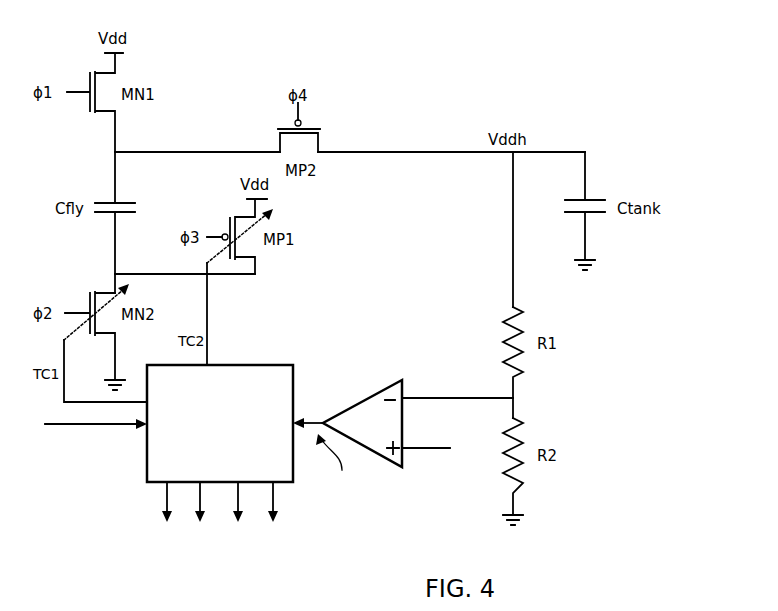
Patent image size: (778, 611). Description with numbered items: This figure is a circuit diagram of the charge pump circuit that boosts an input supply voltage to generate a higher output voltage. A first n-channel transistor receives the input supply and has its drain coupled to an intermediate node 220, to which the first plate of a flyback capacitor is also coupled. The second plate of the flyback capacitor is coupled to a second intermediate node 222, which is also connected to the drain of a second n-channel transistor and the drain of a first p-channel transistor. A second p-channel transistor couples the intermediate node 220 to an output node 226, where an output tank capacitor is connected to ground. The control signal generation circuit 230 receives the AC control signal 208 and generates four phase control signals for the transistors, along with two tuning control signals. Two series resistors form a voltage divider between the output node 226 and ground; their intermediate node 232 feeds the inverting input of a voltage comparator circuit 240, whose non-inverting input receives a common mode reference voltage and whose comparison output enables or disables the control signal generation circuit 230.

The AC control signal 208 is at (83, 424).
The intermediate node 220 is at (115, 152).
The intermediate node 222 is at (115, 274).
The output node 226 is at (555, 152).
The control signal generation circuit 230 is at (218, 365).
The intermediate node 232 is at (513, 392).
The voltage comparator circuit 240 is at (365, 400).